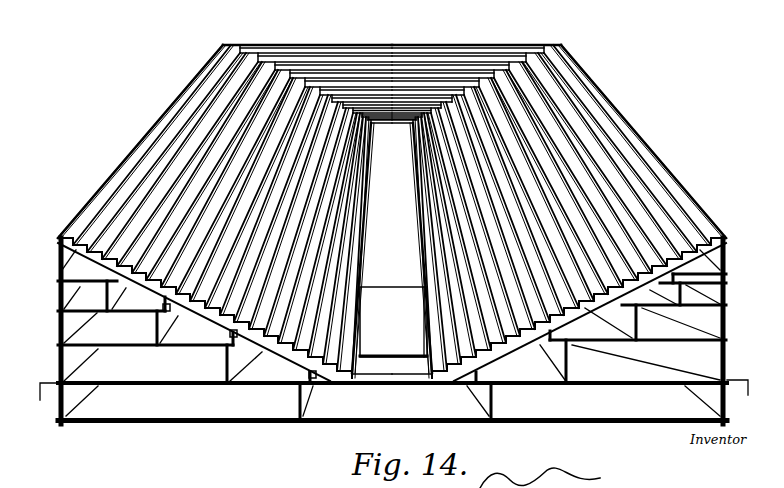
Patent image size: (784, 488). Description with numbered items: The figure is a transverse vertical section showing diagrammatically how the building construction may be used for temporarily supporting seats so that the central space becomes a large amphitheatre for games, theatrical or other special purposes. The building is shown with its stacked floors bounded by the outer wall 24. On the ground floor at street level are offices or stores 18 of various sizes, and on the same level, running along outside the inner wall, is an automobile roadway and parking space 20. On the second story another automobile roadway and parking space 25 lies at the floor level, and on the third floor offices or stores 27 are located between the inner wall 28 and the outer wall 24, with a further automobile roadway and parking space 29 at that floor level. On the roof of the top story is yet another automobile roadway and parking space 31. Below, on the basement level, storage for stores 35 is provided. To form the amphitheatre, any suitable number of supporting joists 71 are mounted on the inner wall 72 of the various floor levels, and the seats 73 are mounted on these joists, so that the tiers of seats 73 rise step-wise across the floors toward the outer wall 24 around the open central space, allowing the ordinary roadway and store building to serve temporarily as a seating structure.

The seats 73 is at (133, 183).
The automobile roadway and parking space 31 is at (77, 279).
The offices or stores 27 is at (111, 296).
The automobile roadway and parking space 29 is at (138, 299).
The outer wall 24 is at (56, 330).
The inner wall 28 is at (145, 328).
The automobile roadway and parking space 25 is at (196, 330).
The offices or stores 18 is at (145, 364).
The inner wall 72 is at (168, 311).
The supporting joists 71 is at (209, 322).
The automobile roadway and parking space 20 is at (270, 367).
The storage for stores 35 is at (189, 401).